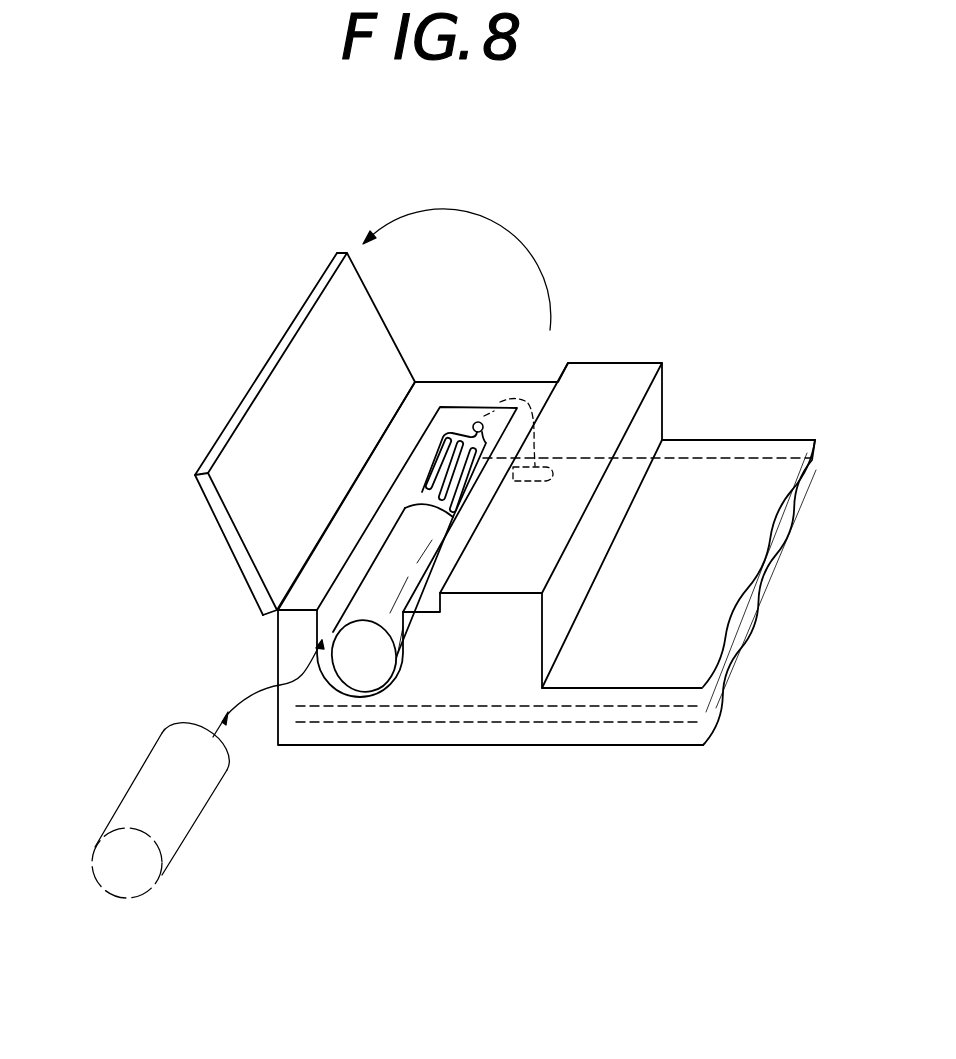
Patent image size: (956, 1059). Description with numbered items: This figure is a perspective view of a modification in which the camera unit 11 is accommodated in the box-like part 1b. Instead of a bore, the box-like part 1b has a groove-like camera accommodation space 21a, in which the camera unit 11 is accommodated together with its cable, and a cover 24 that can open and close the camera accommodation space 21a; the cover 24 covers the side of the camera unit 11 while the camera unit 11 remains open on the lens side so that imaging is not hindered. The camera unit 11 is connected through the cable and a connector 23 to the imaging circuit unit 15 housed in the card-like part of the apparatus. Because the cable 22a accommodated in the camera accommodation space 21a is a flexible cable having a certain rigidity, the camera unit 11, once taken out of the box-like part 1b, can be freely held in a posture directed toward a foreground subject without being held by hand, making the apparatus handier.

The box-like part 1b is at (653, 334).
The camera unit 11 is at (395, 545).
The imaging circuit unit 15 is at (720, 470).
The groove-like camera accommodation space 21a is at (433, 430).
The flexible cable 22a is at (460, 428).
The connector 23 is at (553, 457).
The cover 24 is at (297, 355).